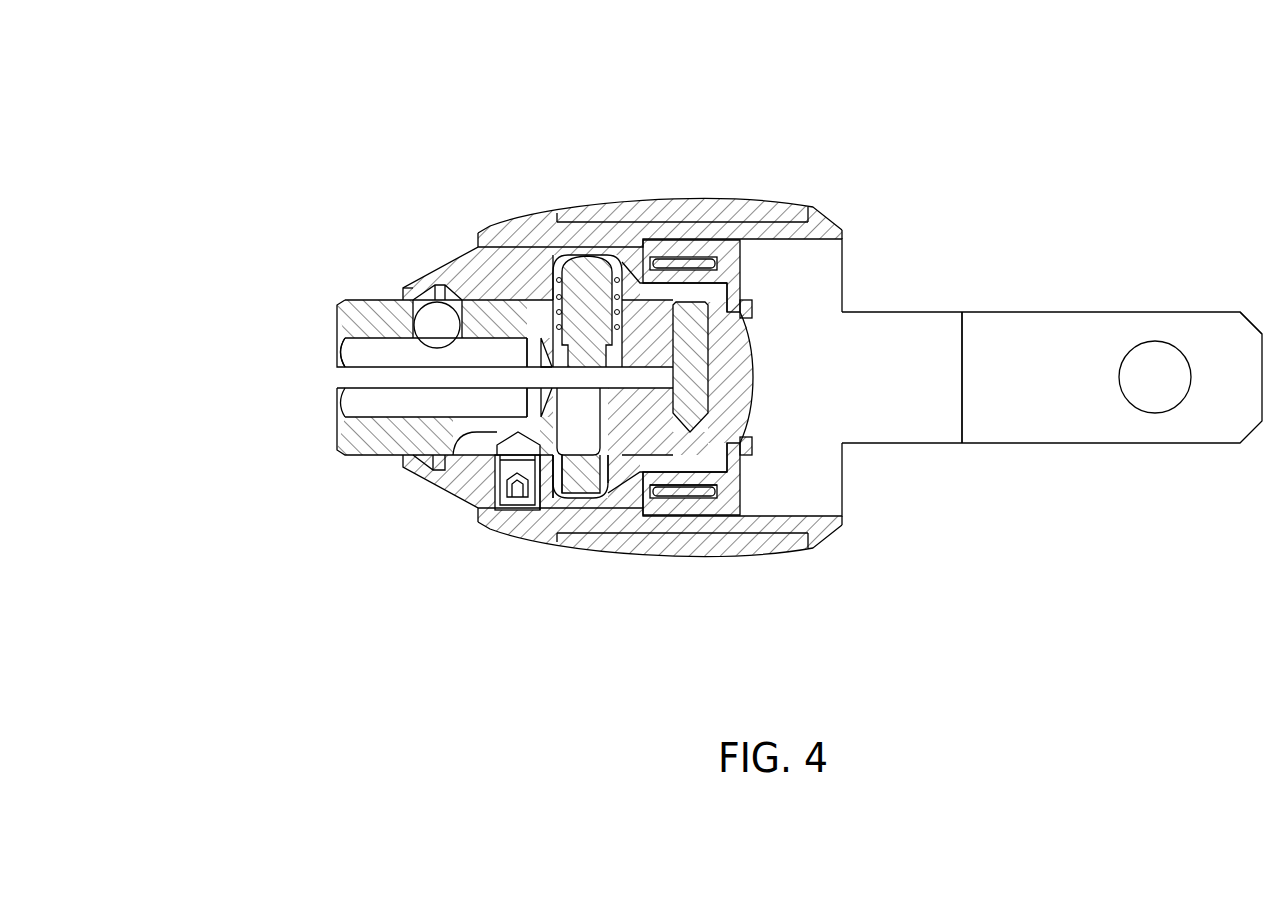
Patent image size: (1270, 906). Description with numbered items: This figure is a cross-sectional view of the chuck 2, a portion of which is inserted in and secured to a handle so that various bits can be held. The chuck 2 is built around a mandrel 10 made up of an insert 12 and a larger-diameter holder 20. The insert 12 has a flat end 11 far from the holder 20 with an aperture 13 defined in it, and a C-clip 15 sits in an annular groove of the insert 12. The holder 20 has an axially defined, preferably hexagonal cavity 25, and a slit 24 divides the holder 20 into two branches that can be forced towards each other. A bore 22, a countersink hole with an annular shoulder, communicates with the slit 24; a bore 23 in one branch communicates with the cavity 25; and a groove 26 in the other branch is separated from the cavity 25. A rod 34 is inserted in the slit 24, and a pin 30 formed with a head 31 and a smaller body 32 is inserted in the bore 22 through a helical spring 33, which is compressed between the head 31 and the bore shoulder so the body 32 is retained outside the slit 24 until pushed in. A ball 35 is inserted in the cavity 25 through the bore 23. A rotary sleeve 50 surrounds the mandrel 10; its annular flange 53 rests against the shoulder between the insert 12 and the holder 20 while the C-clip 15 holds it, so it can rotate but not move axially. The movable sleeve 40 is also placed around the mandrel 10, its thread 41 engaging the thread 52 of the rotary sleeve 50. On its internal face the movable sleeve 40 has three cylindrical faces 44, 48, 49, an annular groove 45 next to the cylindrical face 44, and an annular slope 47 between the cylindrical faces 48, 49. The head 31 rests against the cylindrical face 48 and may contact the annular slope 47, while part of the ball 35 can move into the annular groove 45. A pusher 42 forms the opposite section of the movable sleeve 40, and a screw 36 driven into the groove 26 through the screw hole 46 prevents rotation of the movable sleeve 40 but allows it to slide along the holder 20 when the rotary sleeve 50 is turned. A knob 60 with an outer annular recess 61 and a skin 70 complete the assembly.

The chuck 2 is at (302, 147).
The mandrel 10 is at (1078, 533).
The flat end 11 is at (1028, 433).
The insert 12 is at (913, 433).
The aperture 13 is at (1142, 402).
The C-clip 15 is at (752, 306).
The holder 20 is at (760, 478).
The bore 22 is at (552, 470).
The bore 23 is at (403, 292).
The slit 24 is at (648, 500).
The cavity 25 is at (350, 350).
The groove 26 is at (498, 470).
The pin 30 is at (618, 113).
The head 31 is at (618, 255).
The body 32 is at (583, 305).
The helical spring 33 is at (553, 290).
The rod 34 is at (688, 330).
The ball 35 is at (425, 292).
The screw 36 is at (545, 470).
The movable sleeve 40 is at (470, 240).
The thread 41 is at (800, 545).
The pusher 42 is at (437, 322).
The cylindrical face 44 is at (488, 302).
The annular groove 45 is at (450, 452).
The screw hole 46 is at (515, 500).
The annular slope 47 is at (615, 490).
The cylindrical face 48 is at (580, 485).
The cylindrical face 49 is at (690, 500).
The rotary sleeve 50 is at (690, 250).
The thread 52 is at (700, 262).
The annular flange 53 is at (738, 282).
The knob 60 is at (833, 232).
The annular recess 61 is at (728, 510).
The skin 70 is at (762, 540).